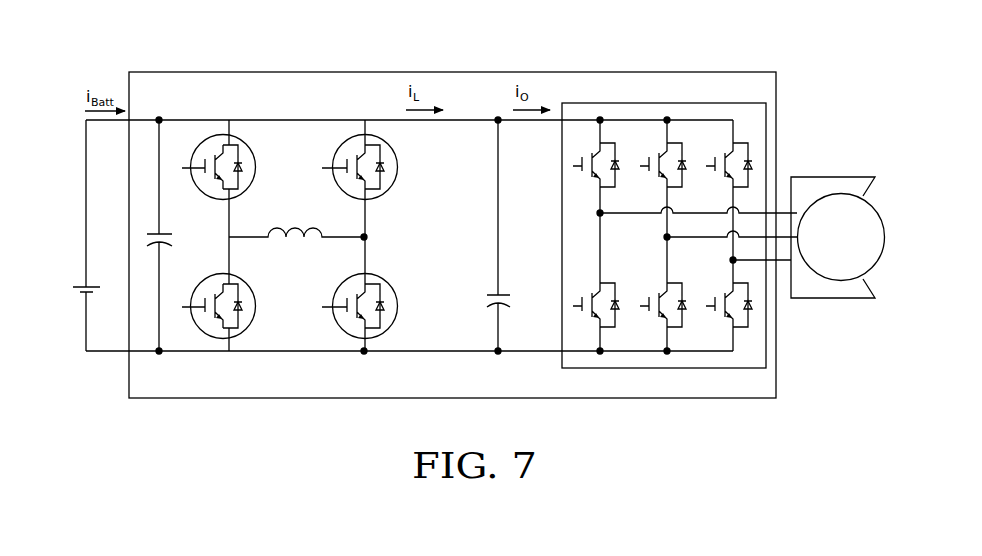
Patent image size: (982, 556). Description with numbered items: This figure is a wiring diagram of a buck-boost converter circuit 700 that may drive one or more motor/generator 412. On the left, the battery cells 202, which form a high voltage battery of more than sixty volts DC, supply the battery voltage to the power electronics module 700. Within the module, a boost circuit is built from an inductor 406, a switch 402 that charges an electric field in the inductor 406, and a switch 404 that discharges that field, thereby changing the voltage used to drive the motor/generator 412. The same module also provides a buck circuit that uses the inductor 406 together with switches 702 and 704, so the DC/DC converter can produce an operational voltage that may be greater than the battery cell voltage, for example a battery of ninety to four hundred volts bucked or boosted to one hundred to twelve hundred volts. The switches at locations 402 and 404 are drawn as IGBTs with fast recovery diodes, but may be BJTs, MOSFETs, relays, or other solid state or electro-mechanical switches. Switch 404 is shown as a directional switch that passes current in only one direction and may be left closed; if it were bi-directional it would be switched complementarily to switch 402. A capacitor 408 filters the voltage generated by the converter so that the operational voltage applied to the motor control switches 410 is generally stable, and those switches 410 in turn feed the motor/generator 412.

The buck-boost converter circuit 700 is at (593, 72).
The battery cells 202 is at (80, 287).
The switch 702 is at (252, 150).
The switch 704 is at (251, 322).
The inductor 406 is at (302, 220).
The switch 404 is at (397, 167).
The switch 402 is at (397, 305).
The capacitor 408 is at (493, 297).
The motor control switches 410 is at (668, 103).
The motor/generator 412 is at (885, 263).